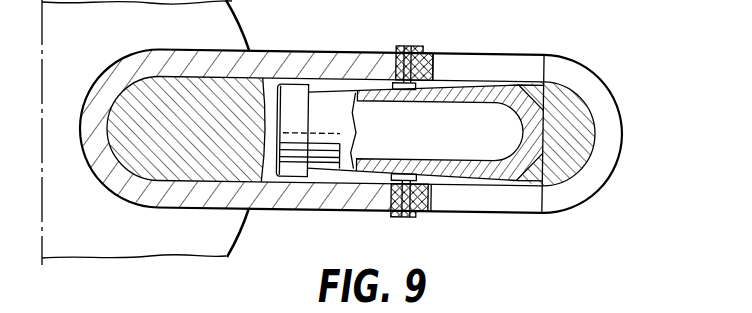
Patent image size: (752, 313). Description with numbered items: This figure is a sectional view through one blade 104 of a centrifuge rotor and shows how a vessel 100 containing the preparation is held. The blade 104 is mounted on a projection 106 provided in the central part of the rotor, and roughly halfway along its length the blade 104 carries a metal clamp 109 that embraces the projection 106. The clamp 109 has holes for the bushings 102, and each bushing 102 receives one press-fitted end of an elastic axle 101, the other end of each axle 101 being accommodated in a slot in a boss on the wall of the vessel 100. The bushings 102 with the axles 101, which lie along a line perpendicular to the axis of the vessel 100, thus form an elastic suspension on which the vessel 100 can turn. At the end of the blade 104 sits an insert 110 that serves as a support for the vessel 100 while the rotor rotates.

The vessel 100 is at (493, 92).
The elastic axle 101 is at (432, 72).
The bushing 102 is at (400, 46).
The blade 104 is at (488, 202).
The projection 106 is at (247, 85).
The metal clamp 109 is at (325, 60).
The insert 110 is at (560, 97).